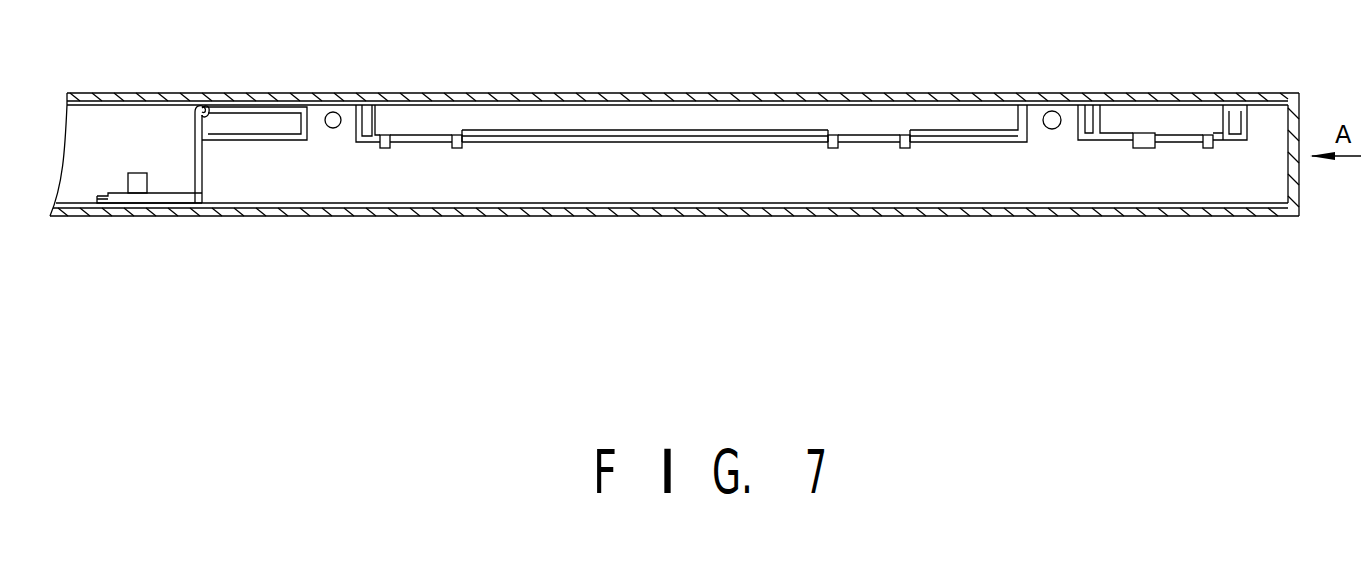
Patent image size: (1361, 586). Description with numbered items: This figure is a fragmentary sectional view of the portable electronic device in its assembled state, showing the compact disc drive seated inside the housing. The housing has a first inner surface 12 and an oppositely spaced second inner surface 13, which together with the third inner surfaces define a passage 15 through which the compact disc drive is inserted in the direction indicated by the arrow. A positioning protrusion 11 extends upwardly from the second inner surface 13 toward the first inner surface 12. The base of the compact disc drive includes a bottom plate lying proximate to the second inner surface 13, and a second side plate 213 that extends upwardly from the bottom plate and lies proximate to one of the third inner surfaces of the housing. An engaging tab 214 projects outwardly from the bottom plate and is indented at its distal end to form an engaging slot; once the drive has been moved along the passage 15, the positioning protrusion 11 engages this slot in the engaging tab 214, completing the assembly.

The positioning protrusion 11 is at (137, 188).
The first inner surface 12 is at (651, 93).
The second inner surface 13 is at (538, 217).
The passage 15 is at (165, 148).
The second side plate 213 is at (973, 165).
The engaging tab 214 is at (172, 203).